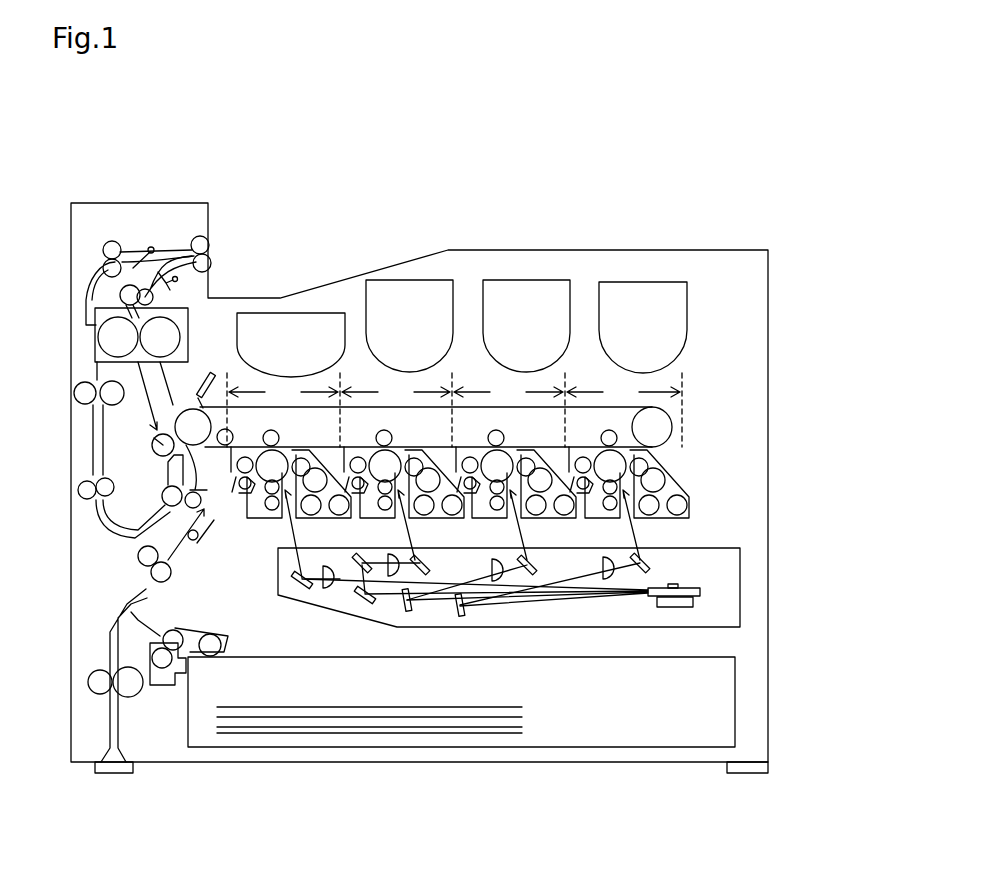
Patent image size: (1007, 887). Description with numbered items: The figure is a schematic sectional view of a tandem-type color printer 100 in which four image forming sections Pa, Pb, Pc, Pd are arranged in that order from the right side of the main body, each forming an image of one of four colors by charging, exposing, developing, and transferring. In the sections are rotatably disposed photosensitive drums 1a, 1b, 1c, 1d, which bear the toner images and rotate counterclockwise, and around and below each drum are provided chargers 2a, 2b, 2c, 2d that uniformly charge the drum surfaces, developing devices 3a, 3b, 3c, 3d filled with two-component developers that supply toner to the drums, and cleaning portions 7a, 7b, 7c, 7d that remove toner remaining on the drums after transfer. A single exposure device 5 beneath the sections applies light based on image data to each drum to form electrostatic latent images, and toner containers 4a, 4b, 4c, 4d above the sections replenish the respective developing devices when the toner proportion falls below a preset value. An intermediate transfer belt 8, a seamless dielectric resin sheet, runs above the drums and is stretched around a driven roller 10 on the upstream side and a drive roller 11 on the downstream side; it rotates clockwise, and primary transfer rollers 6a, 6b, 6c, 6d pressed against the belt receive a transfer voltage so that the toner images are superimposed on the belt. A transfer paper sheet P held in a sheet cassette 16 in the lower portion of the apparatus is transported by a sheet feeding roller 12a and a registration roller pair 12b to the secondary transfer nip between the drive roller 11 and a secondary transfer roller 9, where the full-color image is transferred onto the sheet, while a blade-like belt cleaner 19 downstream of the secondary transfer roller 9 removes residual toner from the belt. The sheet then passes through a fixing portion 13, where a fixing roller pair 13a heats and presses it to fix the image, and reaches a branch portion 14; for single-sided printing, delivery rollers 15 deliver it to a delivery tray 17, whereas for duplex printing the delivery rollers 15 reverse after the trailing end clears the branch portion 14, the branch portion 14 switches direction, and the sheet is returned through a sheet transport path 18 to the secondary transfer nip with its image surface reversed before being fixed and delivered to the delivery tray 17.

The color printer 100 is at (615, 212).
The photosensitive drum 1a is at (597, 464).
The photosensitive drum 1b is at (484, 464).
The photosensitive drum 1c is at (372, 464).
The photosensitive drum 1d is at (259, 464).
The charger 2a is at (607, 516).
The charger 2b is at (494, 516).
The charger 2c is at (382, 516).
The charger 2d is at (269, 516).
The developing device 3a is at (689, 499).
The developing device 3b is at (539, 455).
The developing device 3c is at (427, 455).
The developing device 3d is at (314, 455).
The toner container 4a is at (643, 327).
The toner container 4b is at (526, 326).
The toner container 4c is at (409, 326).
The toner container 4d is at (291, 345).
The exposure device 5 is at (742, 575).
The primary transfer roller 6a is at (604, 437).
The primary transfer roller 6b is at (491, 437).
The primary transfer roller 6c is at (379, 437).
The primary transfer roller 6d is at (266, 437).
The cleaning portion 7a is at (567, 512).
The cleaning portion 7b is at (454, 512).
The cleaning portion 7c is at (342, 512).
The cleaning portion 7d is at (238, 490).
The intermediate transfer belt 8 is at (660, 410).
The secondary transfer roller 9 is at (152, 446).
The driven roller 10 is at (662, 427).
The drive roller 11 is at (193, 402).
The sheet feeding roller 12a is at (216, 640).
The registration roller pair 12b is at (198, 510).
The fixing portion 13 is at (95, 322).
The fixing roller pair 13a is at (108, 338).
The branch portion 14 is at (104, 250).
The delivery rollers 15 is at (212, 250).
The sheet cassette 16 is at (768, 700).
The delivery tray 17 is at (340, 275).
The sheet transport path 18 is at (90, 420).
The belt cleaner 19 is at (198, 395).
The transfer paper sheet P is at (448, 707).
The image forming section Pa is at (623, 392).
The image forming section Pb is at (508, 392).
The image forming section Pc is at (396, 392).
The image forming section Pd is at (283, 392).